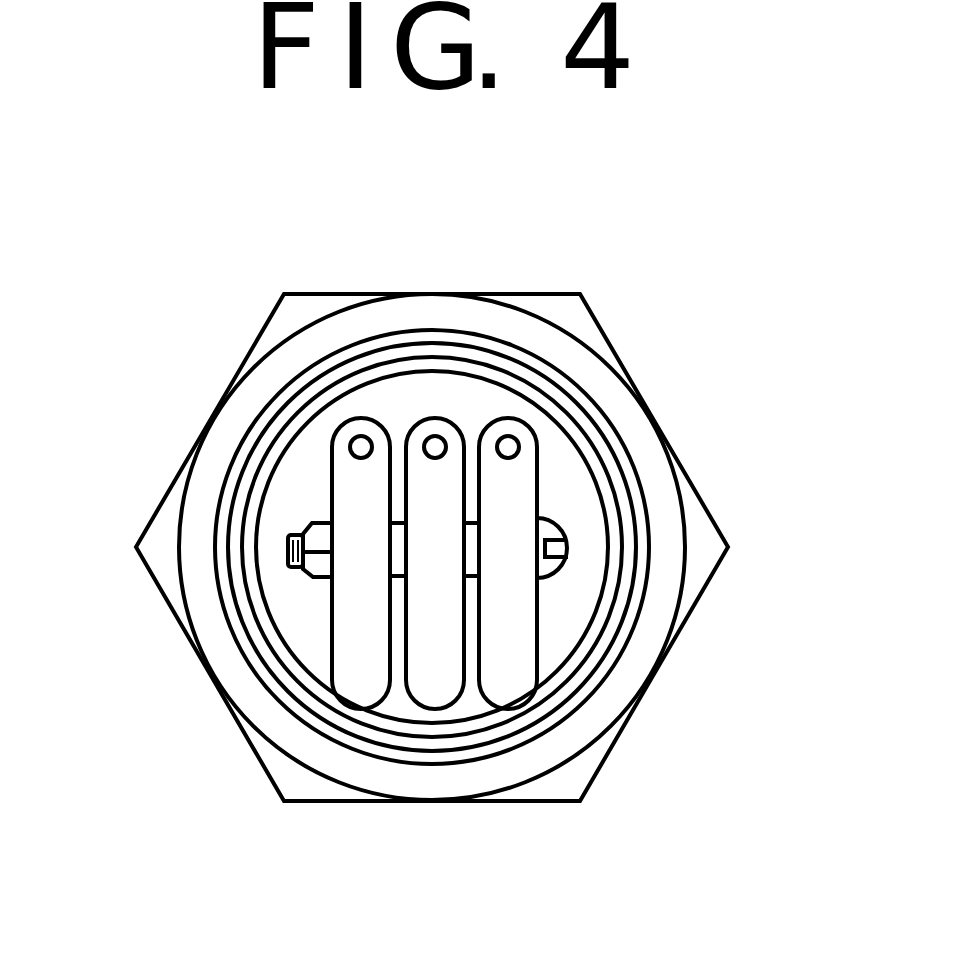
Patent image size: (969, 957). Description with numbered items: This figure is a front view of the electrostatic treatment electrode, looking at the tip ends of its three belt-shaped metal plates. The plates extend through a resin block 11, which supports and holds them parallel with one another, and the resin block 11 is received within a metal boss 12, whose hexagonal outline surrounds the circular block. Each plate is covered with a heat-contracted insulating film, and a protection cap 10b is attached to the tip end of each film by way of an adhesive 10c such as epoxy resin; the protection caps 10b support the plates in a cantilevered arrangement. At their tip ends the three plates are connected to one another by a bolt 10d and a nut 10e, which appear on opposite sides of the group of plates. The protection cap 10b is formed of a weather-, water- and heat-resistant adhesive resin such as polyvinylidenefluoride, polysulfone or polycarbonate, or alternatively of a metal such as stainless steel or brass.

The protection cap 10b is at (353, 685).
The adhesive 10c is at (515, 452).
The bolt 10d is at (566, 560).
The nut 10e is at (313, 575).
The resin block 11 is at (553, 432).
The metal boss 12 is at (705, 589).